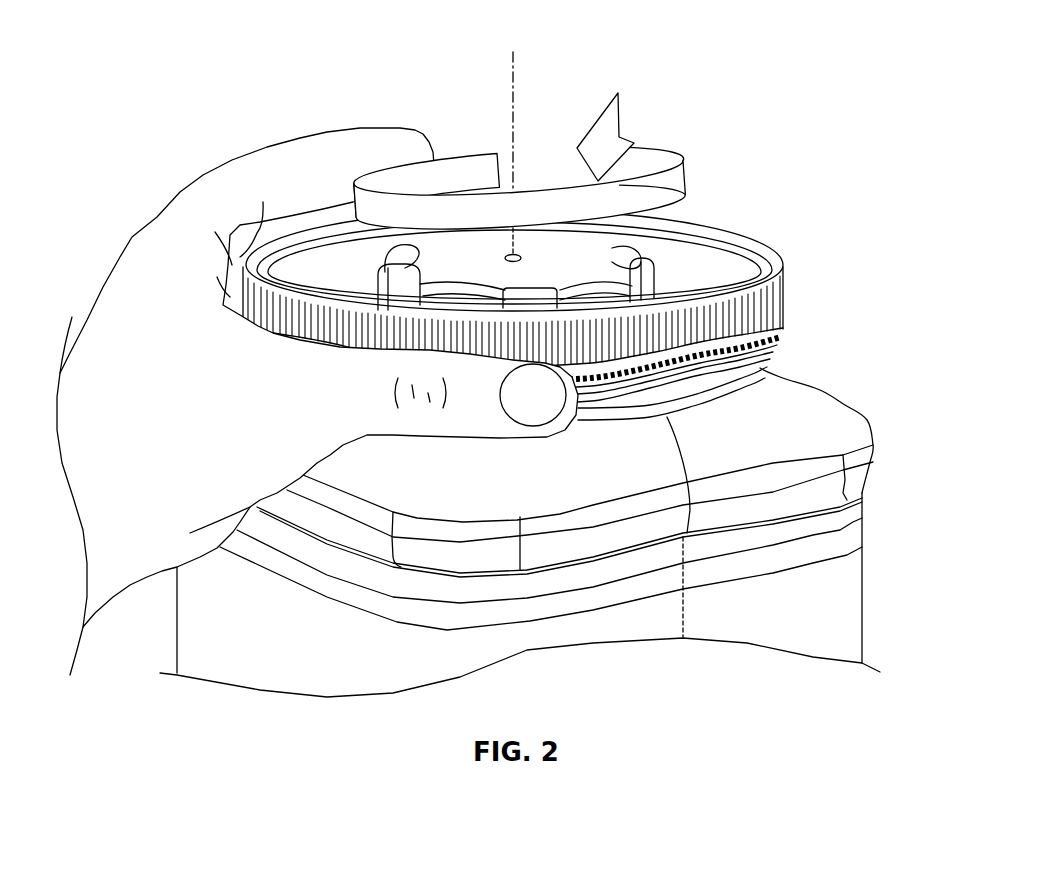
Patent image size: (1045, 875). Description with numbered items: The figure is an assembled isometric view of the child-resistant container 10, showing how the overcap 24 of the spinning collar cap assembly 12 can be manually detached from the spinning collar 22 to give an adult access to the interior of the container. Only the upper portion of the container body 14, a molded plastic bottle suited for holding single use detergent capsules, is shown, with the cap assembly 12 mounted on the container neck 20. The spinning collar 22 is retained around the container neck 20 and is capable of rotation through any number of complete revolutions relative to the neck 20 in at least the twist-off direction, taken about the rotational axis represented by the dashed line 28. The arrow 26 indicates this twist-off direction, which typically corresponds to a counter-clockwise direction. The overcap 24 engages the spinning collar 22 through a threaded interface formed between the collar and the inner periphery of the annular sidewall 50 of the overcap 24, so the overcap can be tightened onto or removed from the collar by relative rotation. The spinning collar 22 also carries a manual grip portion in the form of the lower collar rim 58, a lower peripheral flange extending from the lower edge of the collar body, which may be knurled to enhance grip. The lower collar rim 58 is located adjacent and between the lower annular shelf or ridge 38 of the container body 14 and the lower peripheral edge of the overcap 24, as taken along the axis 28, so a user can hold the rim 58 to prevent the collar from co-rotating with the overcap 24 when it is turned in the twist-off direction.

The child-resistant container 10 is at (526, 417).
The spinning collar cap assembly 12 is at (546, 310).
The container body 14 is at (840, 606).
The container neck 20 is at (697, 400).
The spinning collar 22 is at (787, 325).
The overcap 24 is at (268, 258).
The arrow 26 is at (624, 146).
The rotational axis 28 is at (520, 90).
The lower annular shelf or ridge 38 is at (600, 395).
The annular sidewall 50 is at (779, 286).
The lower collar rim 58 is at (657, 380).